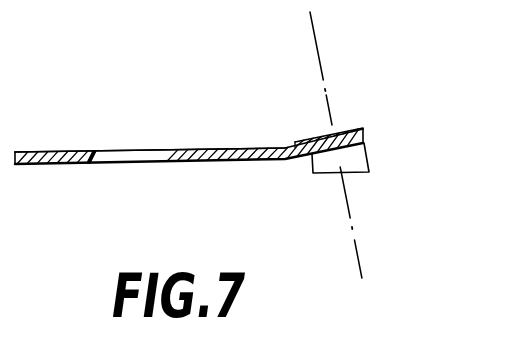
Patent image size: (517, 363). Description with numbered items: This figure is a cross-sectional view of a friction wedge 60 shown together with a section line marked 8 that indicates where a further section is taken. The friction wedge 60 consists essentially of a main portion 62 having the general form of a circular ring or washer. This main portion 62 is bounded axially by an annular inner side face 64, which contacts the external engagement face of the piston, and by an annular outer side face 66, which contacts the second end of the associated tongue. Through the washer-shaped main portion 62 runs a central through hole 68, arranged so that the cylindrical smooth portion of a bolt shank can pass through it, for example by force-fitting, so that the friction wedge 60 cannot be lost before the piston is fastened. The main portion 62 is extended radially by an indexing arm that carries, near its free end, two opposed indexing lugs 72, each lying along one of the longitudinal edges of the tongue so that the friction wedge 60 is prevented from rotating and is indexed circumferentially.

The section line 8- 8 is at (336, 19).
The friction wedge 60 is at (147, 140).
The main portion 62 is at (80, 165).
The inner side face 64 is at (52, 151).
The outer side face 66 is at (35, 165).
The central through hole 68 is at (163, 165).
The indexing lugs 72 is at (355, 160).